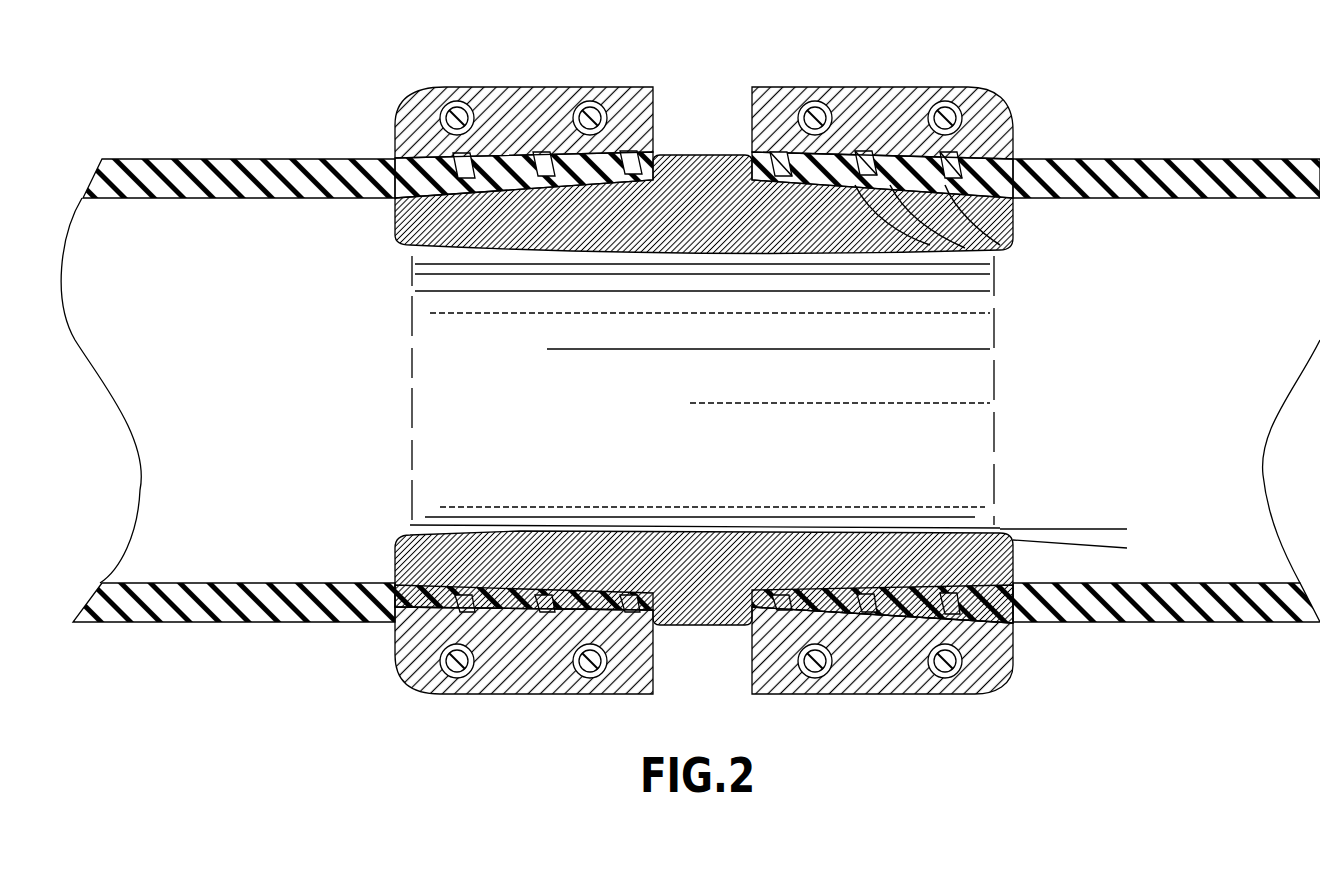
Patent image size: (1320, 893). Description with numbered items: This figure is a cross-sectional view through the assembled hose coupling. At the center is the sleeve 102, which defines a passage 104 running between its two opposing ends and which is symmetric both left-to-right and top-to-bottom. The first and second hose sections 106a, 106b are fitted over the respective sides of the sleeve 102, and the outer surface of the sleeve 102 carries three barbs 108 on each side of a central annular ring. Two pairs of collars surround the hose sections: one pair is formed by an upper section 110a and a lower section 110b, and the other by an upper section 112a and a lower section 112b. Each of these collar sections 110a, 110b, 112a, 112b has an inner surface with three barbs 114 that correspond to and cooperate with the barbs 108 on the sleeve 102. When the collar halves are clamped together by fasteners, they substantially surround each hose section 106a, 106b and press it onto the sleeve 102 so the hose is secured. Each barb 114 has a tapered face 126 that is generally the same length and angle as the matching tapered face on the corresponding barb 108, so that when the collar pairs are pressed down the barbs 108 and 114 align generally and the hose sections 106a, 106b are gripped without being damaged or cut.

The sleeve 102 is at (876, 565).
The passage 104 is at (968, 385).
The first hose section 106a is at (1266, 158).
The second hose section 106b is at (214, 158).
The barbs 108 is at (855, 190).
The upper section of first collar pair 110a is at (912, 88).
The lower section of first collar pair 110b is at (905, 678).
The upper section of second collar pair 112a is at (513, 96).
The lower section of second collar pair 112b is at (500, 684).
The barbs 114 is at (893, 165).
The tapered face 126 is at (1118, 483).